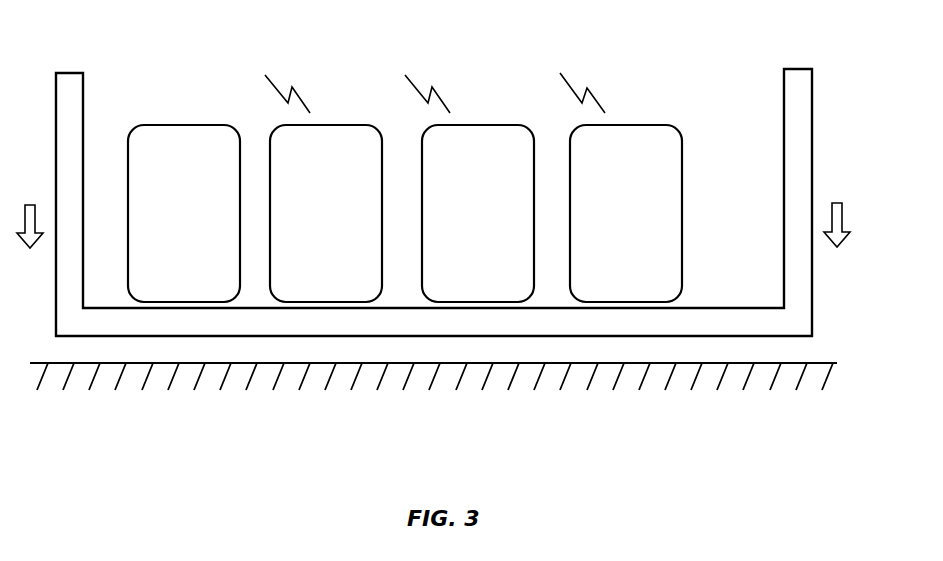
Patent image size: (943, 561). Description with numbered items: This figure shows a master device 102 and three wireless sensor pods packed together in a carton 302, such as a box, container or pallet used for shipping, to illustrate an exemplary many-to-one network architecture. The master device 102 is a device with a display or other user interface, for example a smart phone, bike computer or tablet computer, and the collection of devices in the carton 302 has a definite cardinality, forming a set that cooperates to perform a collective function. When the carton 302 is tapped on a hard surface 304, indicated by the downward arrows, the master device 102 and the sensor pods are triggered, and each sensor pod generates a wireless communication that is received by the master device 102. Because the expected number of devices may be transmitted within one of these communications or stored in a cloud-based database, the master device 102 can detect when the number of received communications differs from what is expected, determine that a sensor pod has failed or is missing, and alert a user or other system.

The carton 302 is at (83, 87).
The hard surface 304 is at (829, 350).
The master device 102 is at (184, 213).